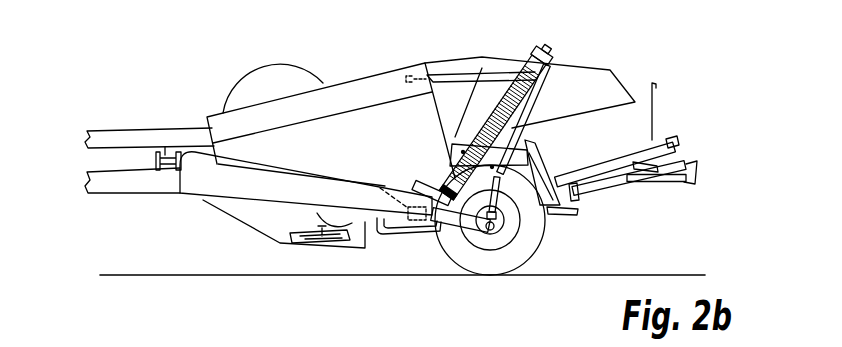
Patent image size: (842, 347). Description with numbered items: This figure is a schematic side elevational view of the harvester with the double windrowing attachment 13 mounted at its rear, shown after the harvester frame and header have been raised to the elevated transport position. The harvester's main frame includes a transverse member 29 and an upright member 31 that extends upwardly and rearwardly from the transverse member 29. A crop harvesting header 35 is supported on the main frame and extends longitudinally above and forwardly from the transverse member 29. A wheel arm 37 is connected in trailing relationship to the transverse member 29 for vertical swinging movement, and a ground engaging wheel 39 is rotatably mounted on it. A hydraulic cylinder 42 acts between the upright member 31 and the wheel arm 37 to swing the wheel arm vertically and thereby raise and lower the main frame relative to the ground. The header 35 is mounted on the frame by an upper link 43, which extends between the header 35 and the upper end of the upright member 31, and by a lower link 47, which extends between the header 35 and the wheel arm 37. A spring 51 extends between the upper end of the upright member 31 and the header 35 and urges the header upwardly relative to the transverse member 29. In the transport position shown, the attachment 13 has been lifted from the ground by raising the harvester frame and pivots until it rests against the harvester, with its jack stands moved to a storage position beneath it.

The windrowing attachment 13 is at (677, 123).
The transverse member 29 is at (377, 175).
The upright member 31 is at (521, 121).
The crop harvesting header 35 is at (366, 88).
The wheel arm 37 is at (450, 228).
The ground engaging wheel 39 is at (499, 266).
The hydraulic cylinder 42 is at (541, 230).
The upper link 43 is at (507, 37).
The lower link 47 is at (386, 237).
The spring 51 is at (537, 88).